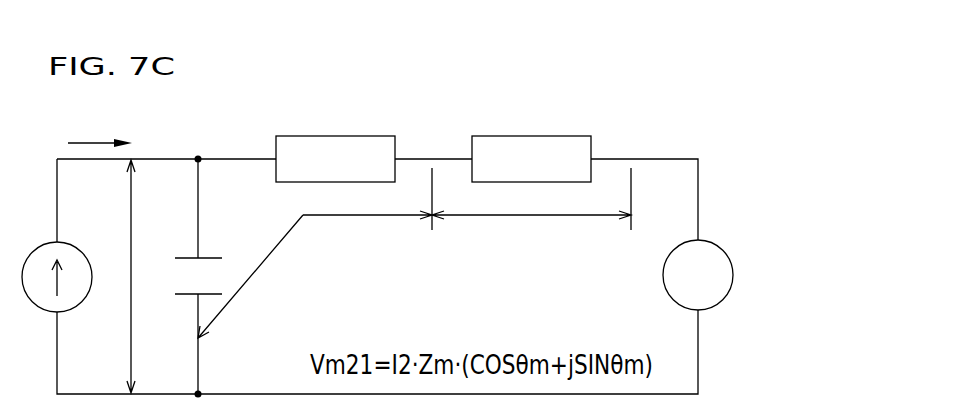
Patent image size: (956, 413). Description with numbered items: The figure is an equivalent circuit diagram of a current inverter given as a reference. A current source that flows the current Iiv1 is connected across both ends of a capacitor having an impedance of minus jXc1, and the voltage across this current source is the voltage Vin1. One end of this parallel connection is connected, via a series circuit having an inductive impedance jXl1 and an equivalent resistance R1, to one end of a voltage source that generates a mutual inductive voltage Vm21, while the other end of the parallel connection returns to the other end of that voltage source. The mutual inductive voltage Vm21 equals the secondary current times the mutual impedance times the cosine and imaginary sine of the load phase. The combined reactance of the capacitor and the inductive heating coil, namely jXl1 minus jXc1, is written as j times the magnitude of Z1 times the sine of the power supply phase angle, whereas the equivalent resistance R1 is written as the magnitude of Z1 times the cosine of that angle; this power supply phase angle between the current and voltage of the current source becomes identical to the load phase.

The current of the current source Iiv1 is at (99, 127).
The voltage of the current source Vin1 is at (116, 276).
The impedance of the capacitor jXc1 is at (183, 276).
The inductive impedance of the inductive heating coil jXl1 is at (335, 139).
The equivalent resistance R1 is at (531, 139).
The mutual inductive voltage Vm21 is at (698, 275).
The impedance Z1 is at (414, 253).